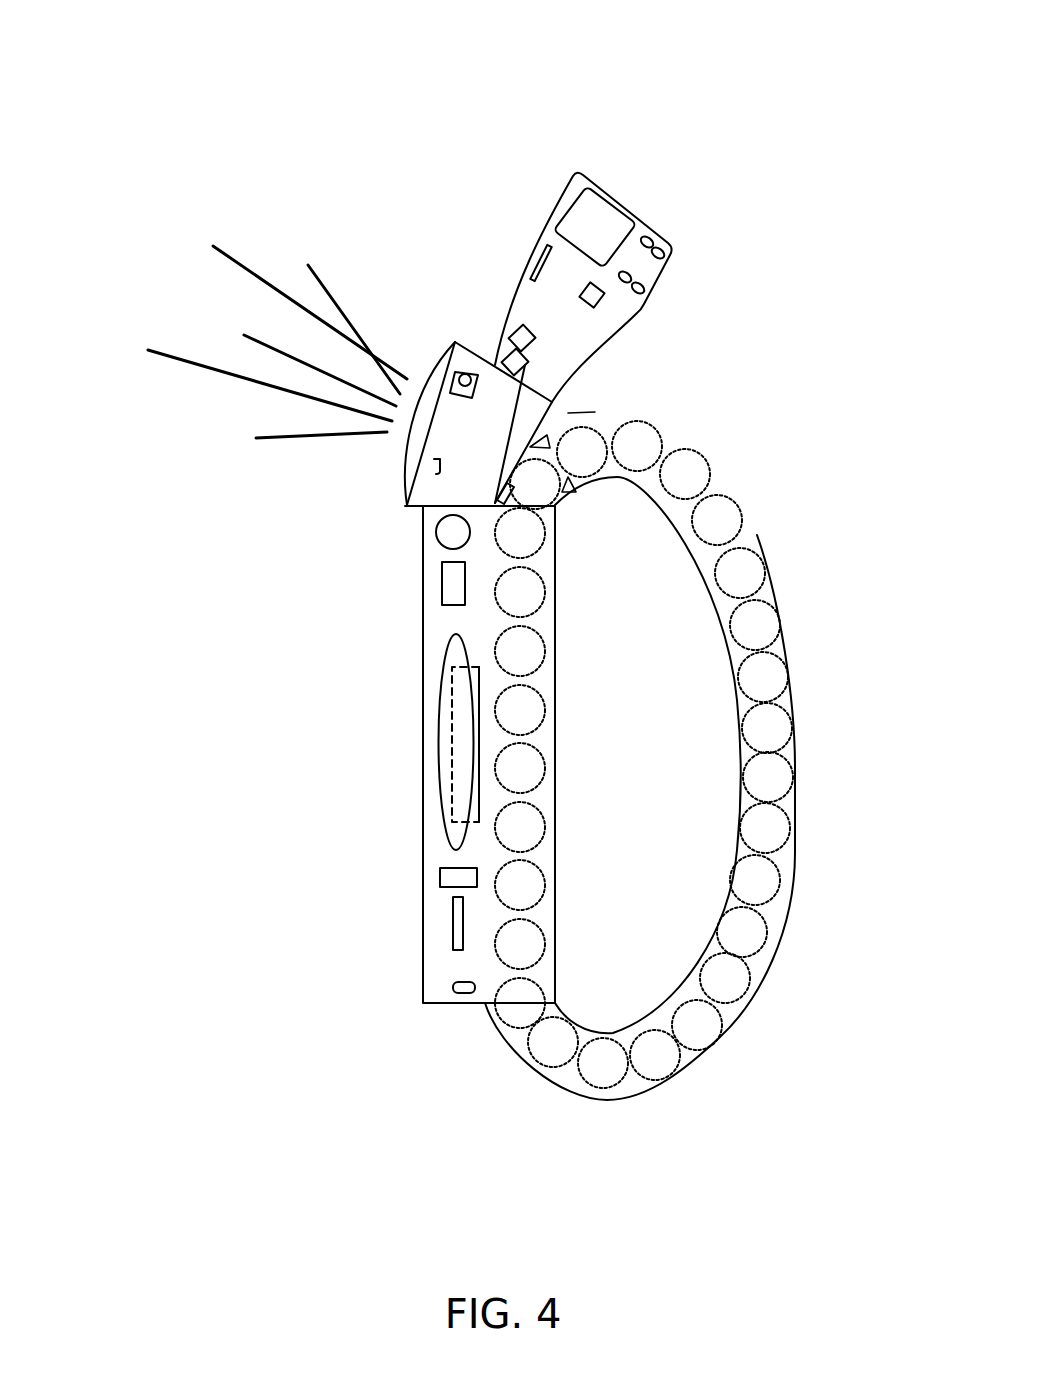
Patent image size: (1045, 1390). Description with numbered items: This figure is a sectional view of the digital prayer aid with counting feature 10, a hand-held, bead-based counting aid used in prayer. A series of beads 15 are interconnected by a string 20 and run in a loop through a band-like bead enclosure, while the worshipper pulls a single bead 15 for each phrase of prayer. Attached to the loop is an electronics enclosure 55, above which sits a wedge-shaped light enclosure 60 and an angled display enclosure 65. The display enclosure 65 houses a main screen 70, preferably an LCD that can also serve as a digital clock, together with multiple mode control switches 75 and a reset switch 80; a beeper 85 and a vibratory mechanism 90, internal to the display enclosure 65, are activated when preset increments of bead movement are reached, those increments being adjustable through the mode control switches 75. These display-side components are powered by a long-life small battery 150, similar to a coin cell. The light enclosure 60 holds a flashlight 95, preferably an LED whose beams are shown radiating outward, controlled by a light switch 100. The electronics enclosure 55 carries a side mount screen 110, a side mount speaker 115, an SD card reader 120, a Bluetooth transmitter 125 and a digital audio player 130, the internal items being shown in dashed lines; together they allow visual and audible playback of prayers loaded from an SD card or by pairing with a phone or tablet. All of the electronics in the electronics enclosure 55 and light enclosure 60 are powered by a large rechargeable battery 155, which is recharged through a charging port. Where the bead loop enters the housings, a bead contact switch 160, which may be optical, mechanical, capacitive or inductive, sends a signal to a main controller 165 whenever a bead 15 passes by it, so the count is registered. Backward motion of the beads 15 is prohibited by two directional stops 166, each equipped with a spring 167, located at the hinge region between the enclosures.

The digital prayer aid with counting feature 10 is at (112, 185).
The beads 15 is at (738, 507).
The string 20 is at (748, 593).
The electronics enclosure 55 is at (423, 587).
The light enclosure 60 is at (405, 503).
The display enclosure 65 is at (571, 170).
The main screen 70 is at (593, 199).
The mode control switches 75 is at (650, 238).
The reset switch 80 is at (630, 276).
The beeper 85 is at (604, 300).
The vibratory mechanism 90 is at (508, 357).
The flashlight 95 is at (403, 443).
The light switch 100 is at (450, 355).
The side mount screen 110 is at (455, 833).
The side mount speaker 115 is at (436, 546).
The SD card reader 120 is at (453, 943).
The Bluetooth transmitter 125 is at (440, 880).
The digital audio player 130 is at (440, 608).
The long-life small battery 150 is at (538, 240).
The large rechargeable battery 155 is at (455, 735).
The bead contact switch 160 is at (512, 497).
The main controller 165 is at (518, 323).
The directional stops 166 is at (595, 412).
The spring 167 is at (540, 433).